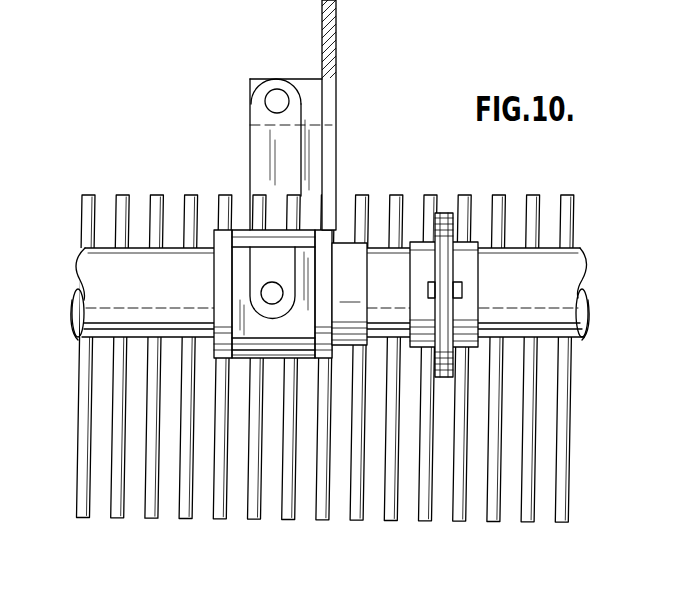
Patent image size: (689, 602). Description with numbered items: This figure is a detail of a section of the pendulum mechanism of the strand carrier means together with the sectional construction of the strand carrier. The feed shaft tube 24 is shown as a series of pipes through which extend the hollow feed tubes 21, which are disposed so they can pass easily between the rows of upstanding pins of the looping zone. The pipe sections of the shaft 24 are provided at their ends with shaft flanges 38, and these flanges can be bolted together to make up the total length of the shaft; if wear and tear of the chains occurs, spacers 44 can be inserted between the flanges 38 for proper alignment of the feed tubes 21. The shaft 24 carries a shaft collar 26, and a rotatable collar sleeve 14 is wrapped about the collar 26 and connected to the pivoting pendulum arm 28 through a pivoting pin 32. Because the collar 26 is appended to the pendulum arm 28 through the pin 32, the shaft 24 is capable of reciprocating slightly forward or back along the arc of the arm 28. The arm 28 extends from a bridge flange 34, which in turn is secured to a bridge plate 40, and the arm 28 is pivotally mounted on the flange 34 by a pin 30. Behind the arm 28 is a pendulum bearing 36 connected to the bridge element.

The rotatable collar sleeve 14 is at (275, 260).
The hollow feed tubes 21 is at (528, 446).
The feed shaft tube 24 is at (88, 280).
The shaft collar 26 is at (326, 236).
The pendulum arm 28 is at (289, 133).
The pin 30 is at (272, 100).
The pivoting pin 32 is at (278, 293).
The bridge flange 34 is at (302, 92).
The pendulum bearing 36 is at (312, 147).
The shaft flanges 38 is at (467, 283).
The bridge plate 40 is at (331, 20).
The spacers 44 is at (446, 212).